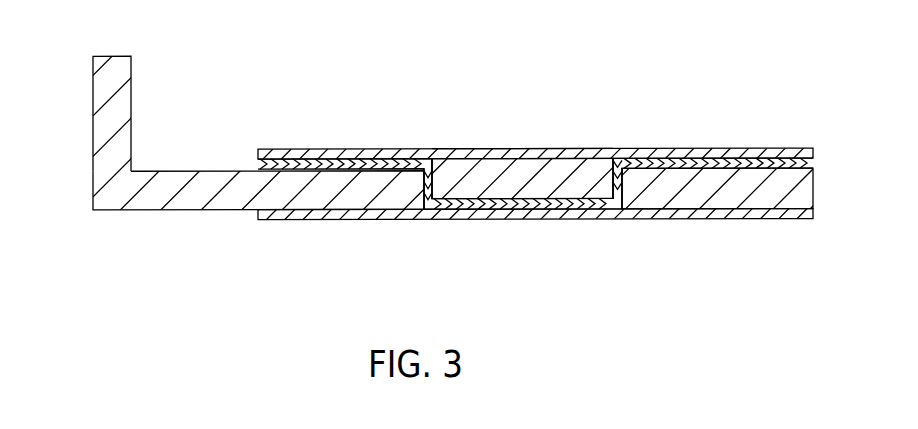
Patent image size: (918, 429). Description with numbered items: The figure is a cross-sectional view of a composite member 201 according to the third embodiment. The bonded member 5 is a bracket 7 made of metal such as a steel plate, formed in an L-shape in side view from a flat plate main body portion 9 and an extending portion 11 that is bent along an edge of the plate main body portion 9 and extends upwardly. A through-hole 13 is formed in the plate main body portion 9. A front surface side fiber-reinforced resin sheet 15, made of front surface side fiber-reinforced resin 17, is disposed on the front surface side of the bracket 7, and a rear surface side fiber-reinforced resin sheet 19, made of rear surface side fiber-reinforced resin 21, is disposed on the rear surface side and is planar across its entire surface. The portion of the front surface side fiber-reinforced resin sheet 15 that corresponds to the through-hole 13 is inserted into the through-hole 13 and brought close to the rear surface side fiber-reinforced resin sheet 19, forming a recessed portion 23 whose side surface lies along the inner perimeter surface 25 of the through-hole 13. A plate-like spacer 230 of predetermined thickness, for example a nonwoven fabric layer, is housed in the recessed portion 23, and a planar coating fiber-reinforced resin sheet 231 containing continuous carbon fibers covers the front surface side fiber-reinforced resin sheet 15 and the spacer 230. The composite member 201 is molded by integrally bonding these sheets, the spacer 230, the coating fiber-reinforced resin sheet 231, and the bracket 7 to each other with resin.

The composite member 201 is at (549, 146).
The bracket 7 is at (279, 167).
The bonded member 5 is at (279, 167).
The extending portion 11 is at (93, 137).
The plate main body portion 9 is at (177, 210).
The front surface side fiber-reinforced resin sheet 15 is at (540, 125).
The front surface side fiber-reinforced resin 17 is at (713, 149).
The rear surface side fiber-reinforced resin sheet 19 is at (536, 251).
The rear surface side fiber-reinforced resin 21 is at (687, 220).
The recessed portion 23 is at (568, 200).
The inner perimeter surface 25 is at (523, 224).
The through-hole 13 is at (447, 198).
The spacer 230 is at (492, 178).
The coating fiber-reinforced resin sheet 231 is at (571, 149).